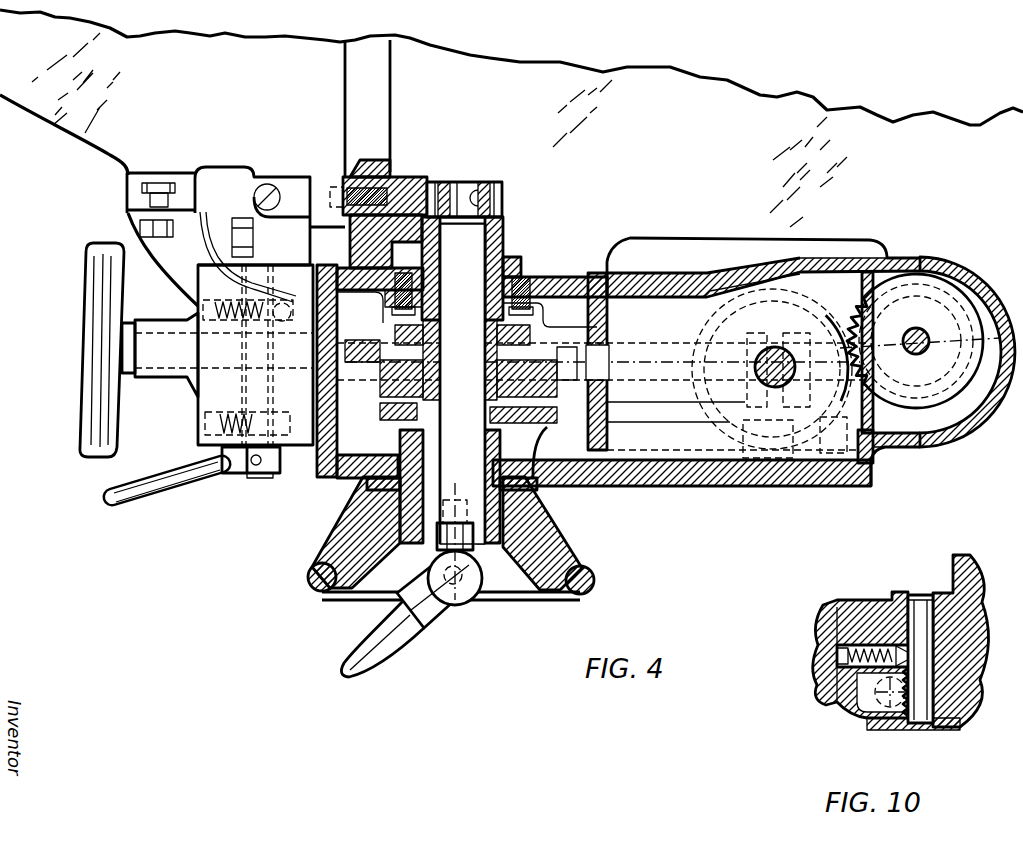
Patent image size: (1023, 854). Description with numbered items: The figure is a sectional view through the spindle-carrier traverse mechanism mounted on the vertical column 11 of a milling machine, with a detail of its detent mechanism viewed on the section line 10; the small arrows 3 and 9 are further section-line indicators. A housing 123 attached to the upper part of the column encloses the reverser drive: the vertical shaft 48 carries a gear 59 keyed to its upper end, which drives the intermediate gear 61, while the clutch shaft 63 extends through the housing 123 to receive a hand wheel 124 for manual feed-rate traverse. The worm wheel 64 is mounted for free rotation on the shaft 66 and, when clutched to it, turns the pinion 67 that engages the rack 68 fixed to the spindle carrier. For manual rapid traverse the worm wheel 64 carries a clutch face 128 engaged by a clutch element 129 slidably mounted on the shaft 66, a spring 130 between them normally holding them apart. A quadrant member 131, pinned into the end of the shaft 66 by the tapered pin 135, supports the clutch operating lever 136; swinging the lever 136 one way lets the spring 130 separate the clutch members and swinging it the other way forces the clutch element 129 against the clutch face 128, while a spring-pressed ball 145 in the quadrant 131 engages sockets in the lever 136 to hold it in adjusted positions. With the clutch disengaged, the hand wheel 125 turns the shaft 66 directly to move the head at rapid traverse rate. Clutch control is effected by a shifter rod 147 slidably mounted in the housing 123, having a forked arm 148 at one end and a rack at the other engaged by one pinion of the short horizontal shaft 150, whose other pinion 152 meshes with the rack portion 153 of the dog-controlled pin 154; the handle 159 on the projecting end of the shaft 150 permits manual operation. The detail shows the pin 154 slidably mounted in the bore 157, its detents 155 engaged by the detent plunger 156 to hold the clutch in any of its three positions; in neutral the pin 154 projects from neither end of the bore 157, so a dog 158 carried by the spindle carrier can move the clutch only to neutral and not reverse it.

In FIG. 4, the vertical column 11 is at (786, 118).
In FIG. 4, the dogs 158 is at (138, 238).
In FIG. 4, the hand wheel 124 is at (93, 273).
In FIG. 4, the short horizontal shaft 150 is at (244, 390).
In FIG. 4, the pinion portion 152 is at (282, 324).
In FIG. 10, the pinion portion 152 is at (877, 712).
In FIG. 4, the handle 159 is at (176, 491).
In FIG. 4, the section line 3 is at (207, 422).
In FIG. 4, the base 10 is at (308, 296).
In FIG. 4, the worm wheel 64 is at (386, 337).
In FIG. 4, the rack 68 is at (428, 173).
In FIG. 4, the pinion 67 is at (500, 196).
In FIG. 4, the shaft 66 is at (476, 250).
In FIG. 4, the spring 130 is at (479, 430).
In FIG. 4, the clutch face 128 is at (598, 392).
In FIG. 4, the clutch element 129 is at (546, 480).
In FIG. 4, the housing 123 is at (646, 478).
In FIG. 4, the shaft 63 is at (661, 334).
In FIG. 4, the shifter rod 147 is at (709, 480).
In FIG. 4, the forked arm 148 is at (786, 480).
In FIG. 4, the intermediate gear 61 is at (832, 302).
In FIG. 4, the shaft 48 is at (940, 322).
In FIG. 4, the gear 59 is at (922, 382).
In FIG. 4, the hand wheel 125 is at (594, 580).
In FIG. 4, the tapered pin 135 is at (380, 510).
In FIG. 4, the spring pressed ball 145 is at (483, 580).
In FIG. 4, the quadrant member 131 is at (480, 597).
In FIG. 4, the clutch operating member 136 is at (416, 625).
In FIG. 4, the section line 9 is at (437, 480).
In FIG. 10, the dog controlled pin 154 is at (917, 605).
In FIG. 10, the detents 155 is at (912, 646).
In FIG. 10, the detent plunger 156 is at (912, 664).
In FIG. 10, the bore 157 is at (912, 703).
In FIG. 10, the rack portion 153 is at (914, 690).